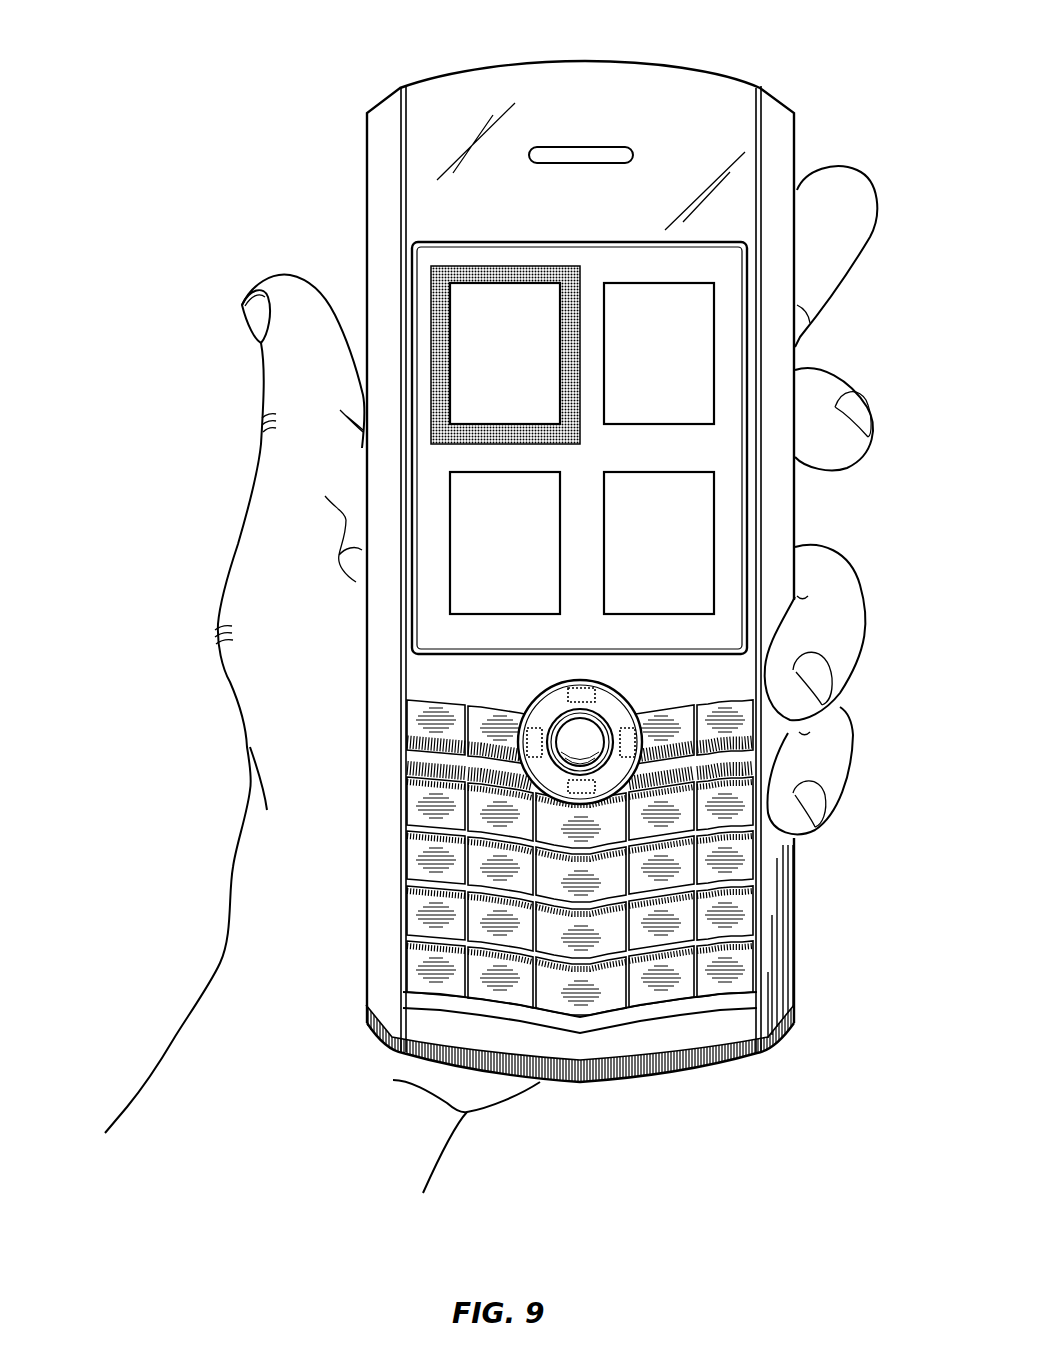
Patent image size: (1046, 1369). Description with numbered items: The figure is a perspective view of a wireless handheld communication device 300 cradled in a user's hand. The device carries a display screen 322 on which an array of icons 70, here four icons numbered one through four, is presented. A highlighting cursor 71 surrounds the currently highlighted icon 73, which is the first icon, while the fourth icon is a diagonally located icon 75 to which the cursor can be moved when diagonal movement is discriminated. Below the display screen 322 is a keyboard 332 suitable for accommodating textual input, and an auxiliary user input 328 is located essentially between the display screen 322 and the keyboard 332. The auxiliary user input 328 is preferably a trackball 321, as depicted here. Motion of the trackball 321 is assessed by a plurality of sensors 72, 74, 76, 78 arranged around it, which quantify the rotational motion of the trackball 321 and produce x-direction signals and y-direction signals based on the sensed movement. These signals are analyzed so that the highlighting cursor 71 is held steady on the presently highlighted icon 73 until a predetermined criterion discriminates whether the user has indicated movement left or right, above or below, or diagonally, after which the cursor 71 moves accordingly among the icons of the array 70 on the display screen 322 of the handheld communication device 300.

The handheld communication device 300 is at (452, 42).
The display screen 322 is at (532, 254).
The array of icons 70 is at (592, 262).
The highlighting cursor 71 is at (440, 315).
The currently highlighted icon 73 is at (463, 315).
The diagonally located icon 75 is at (698, 548).
The trackball 321 is at (572, 738).
The sensor 78 is at (583, 688).
The auxiliary user input 328 is at (618, 693).
The sensor 76 is at (516, 712).
The sensor 72 is at (642, 716).
The sensor 74 is at (590, 797).
The keyboard 332 is at (648, 1022).